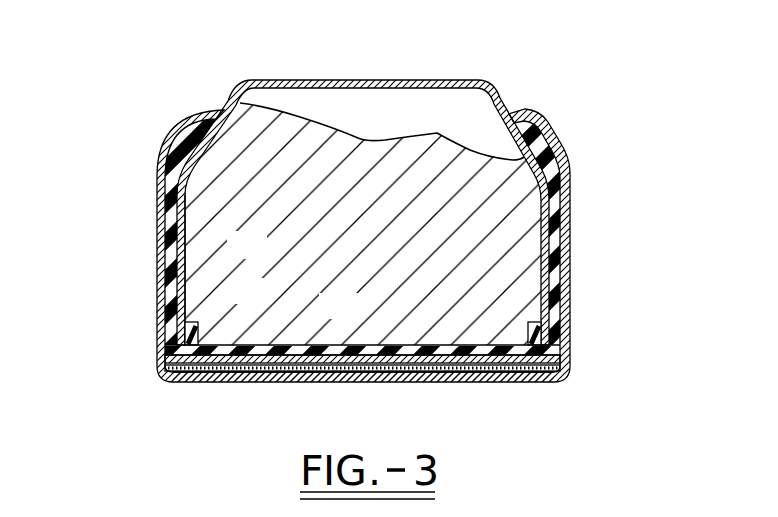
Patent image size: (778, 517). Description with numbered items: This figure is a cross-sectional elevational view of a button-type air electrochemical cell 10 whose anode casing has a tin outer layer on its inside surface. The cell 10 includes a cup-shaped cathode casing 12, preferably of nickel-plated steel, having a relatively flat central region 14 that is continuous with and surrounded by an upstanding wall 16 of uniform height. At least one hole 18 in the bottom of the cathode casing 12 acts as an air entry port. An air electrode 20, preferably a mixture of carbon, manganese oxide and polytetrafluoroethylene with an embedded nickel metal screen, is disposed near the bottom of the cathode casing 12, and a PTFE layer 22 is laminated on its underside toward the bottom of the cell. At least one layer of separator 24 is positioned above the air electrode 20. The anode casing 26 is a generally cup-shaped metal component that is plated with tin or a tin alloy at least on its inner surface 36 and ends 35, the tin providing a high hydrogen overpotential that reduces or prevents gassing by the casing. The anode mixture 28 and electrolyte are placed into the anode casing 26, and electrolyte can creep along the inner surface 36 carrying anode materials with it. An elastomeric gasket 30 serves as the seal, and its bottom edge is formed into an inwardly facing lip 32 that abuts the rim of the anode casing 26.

The button cell 10 is at (166, 116).
The cathode casing 12 is at (157, 203).
The flat central region 14 is at (269, 370).
The upstanding wall 16 is at (157, 270).
The hole 18 is at (362, 376).
The air electrode 20 is at (517, 353).
The PTFE layer 22 is at (466, 365).
The separator 24 is at (367, 345).
The anode casing 26 is at (365, 80).
The anode mixture 28 is at (388, 140).
The gasket 30 is at (558, 254).
The inwardly facing lip 32 is at (199, 322).
The ends 35 is at (551, 344).
The inner surface 36 is at (187, 253).